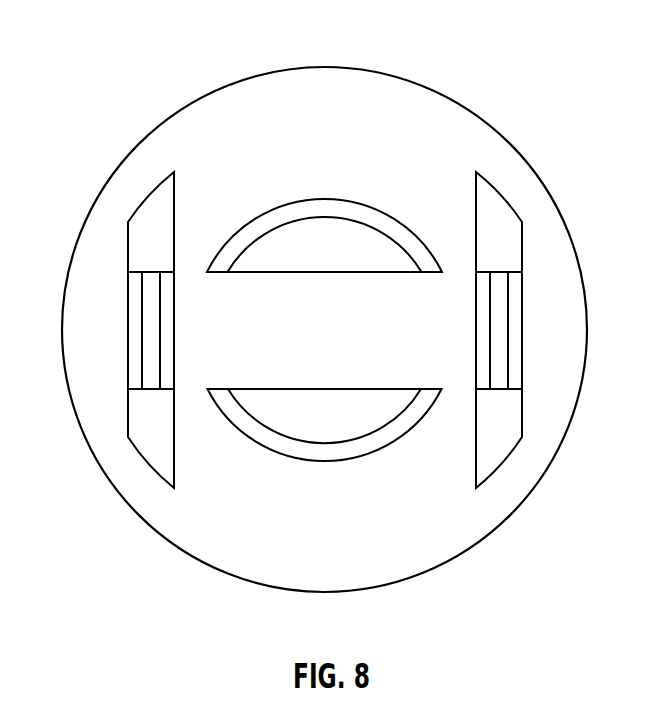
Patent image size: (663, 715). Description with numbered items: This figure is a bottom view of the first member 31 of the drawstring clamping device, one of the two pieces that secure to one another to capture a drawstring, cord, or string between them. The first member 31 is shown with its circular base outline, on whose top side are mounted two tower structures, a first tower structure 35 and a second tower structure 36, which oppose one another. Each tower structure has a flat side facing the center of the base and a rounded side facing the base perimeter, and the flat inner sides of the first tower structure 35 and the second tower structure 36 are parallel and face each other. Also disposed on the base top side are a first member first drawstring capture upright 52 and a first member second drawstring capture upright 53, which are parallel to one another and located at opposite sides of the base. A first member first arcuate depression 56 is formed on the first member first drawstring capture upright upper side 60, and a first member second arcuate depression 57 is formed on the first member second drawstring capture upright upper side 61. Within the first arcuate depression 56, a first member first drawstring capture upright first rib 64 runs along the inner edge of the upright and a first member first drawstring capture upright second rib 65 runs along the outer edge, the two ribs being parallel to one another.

The first member 31 is at (120, 33).
The first tower structure 35 is at (317, 199).
The second tower structure 36 is at (325, 461).
The first member first drawstring capture upright 52 is at (137, 207).
The first member second drawstring capture upright 53 is at (513, 208).
The first member first arcuate depression 56 is at (150, 358).
The first member second arcuate depression 57 is at (495, 333).
The first member first drawstring capture upright upper side 60 is at (158, 207).
The first member second drawstring capture upright upper side 61 is at (489, 208).
The first member first drawstring capture upright first rib 64 is at (167, 367).
The first member first drawstring capture upright second rib 65 is at (133, 308).